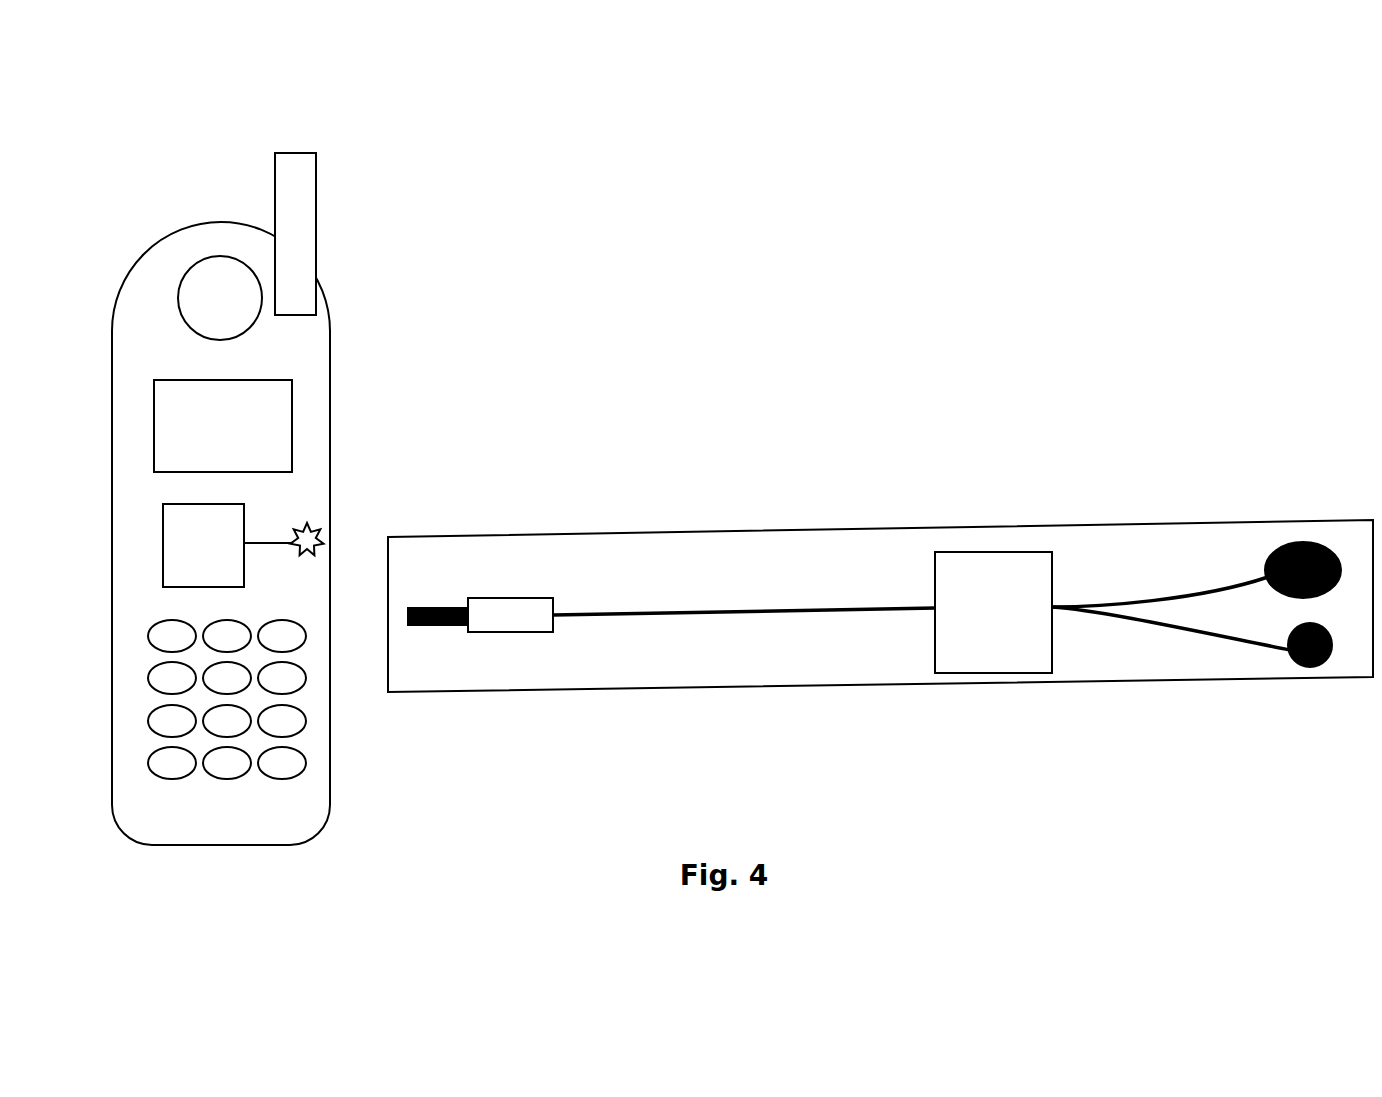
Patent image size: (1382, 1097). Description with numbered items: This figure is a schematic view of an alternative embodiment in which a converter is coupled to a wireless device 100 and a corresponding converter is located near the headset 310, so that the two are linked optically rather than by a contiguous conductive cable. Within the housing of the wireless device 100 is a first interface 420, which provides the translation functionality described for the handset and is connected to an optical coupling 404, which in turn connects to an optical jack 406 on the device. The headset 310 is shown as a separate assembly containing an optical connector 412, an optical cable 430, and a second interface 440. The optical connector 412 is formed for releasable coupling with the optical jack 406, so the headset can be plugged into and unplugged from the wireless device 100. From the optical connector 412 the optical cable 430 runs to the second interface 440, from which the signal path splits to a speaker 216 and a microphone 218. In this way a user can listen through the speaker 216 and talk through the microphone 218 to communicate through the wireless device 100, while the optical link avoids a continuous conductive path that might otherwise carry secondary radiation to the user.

The wireless device 100 is at (220, 230).
The first interface 420 is at (237, 525).
The optical coupling 404 is at (260, 543).
The optical jack 406 is at (305, 543).
The second interface 440 is at (990, 563).
The optical cable 430 is at (921, 613).
The headset 310 is at (880, 606).
The optical connector 412 is at (512, 618).
The speaker 216 is at (1301, 545).
The microphone 218 is at (1307, 667).